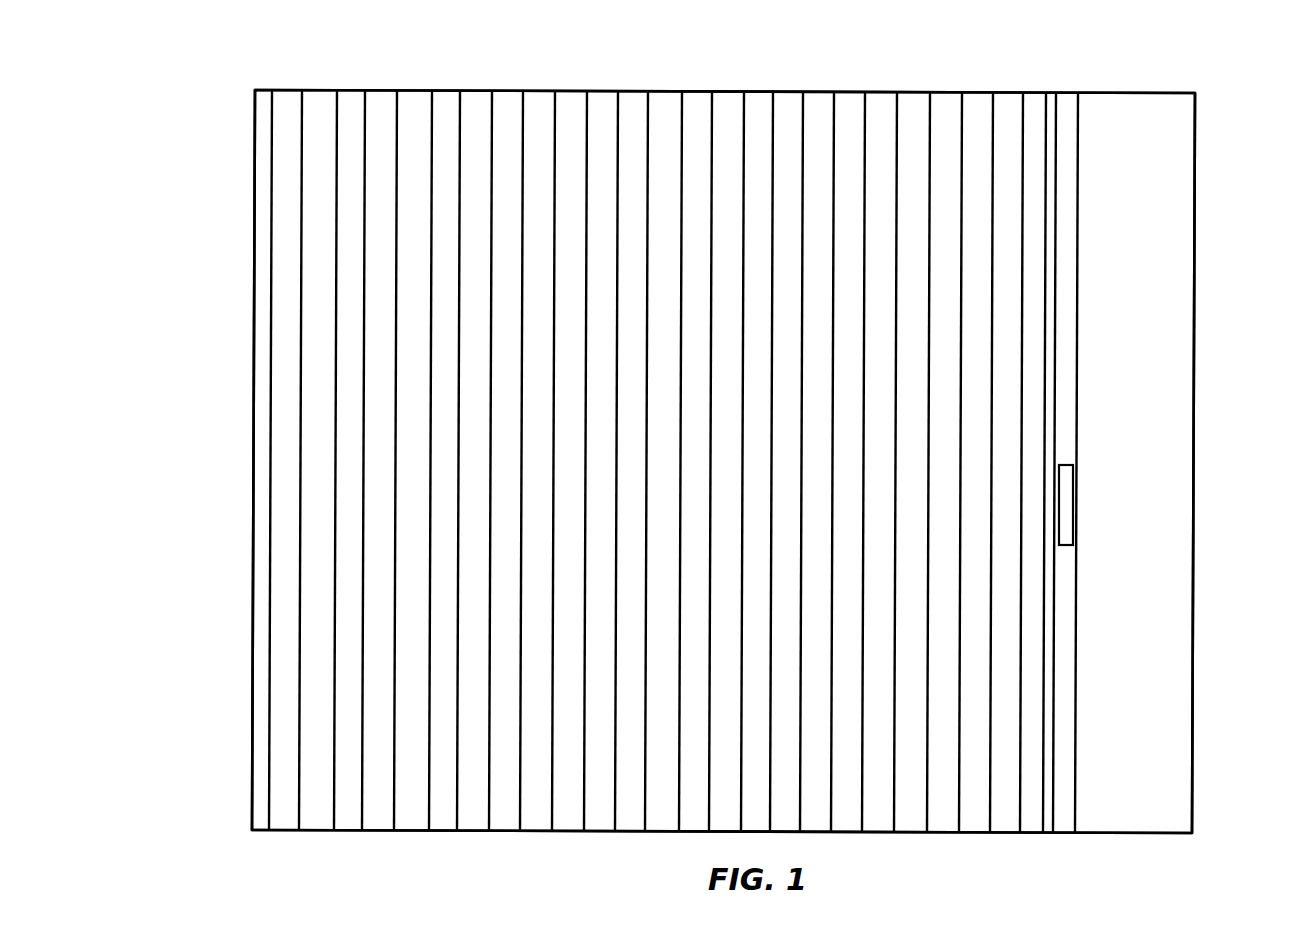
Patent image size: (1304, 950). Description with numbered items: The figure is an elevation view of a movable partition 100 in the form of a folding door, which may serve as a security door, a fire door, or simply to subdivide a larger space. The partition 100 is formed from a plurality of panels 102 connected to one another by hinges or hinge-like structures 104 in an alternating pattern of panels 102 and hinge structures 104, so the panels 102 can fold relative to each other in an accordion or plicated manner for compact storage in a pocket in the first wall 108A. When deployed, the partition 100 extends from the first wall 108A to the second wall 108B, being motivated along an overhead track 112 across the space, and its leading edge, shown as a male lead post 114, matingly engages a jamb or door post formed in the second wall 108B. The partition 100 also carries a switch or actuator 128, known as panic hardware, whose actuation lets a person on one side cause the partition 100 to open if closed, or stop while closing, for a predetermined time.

The movable partition 100 is at (968, 78).
The panels 102 is at (738, 119).
The hinge structures 104 is at (772, 130).
The first wall 108A is at (255, 127).
The second wall 108B is at (1196, 135).
The overhead track 112 is at (1113, 92).
The male lead post 114 is at (1077, 803).
The actuator 128 is at (1066, 465).